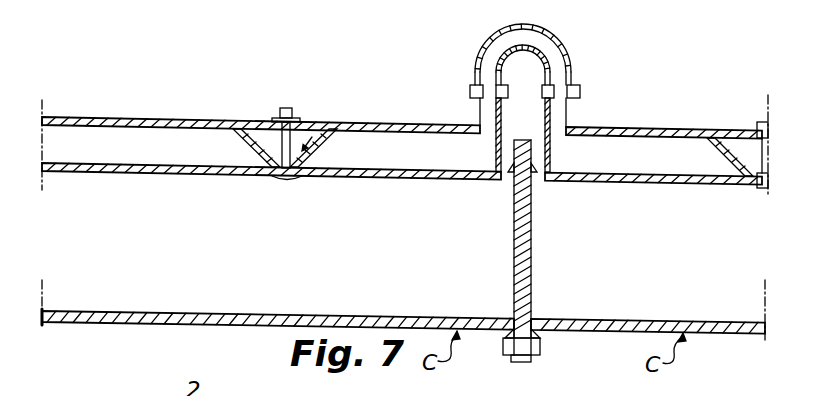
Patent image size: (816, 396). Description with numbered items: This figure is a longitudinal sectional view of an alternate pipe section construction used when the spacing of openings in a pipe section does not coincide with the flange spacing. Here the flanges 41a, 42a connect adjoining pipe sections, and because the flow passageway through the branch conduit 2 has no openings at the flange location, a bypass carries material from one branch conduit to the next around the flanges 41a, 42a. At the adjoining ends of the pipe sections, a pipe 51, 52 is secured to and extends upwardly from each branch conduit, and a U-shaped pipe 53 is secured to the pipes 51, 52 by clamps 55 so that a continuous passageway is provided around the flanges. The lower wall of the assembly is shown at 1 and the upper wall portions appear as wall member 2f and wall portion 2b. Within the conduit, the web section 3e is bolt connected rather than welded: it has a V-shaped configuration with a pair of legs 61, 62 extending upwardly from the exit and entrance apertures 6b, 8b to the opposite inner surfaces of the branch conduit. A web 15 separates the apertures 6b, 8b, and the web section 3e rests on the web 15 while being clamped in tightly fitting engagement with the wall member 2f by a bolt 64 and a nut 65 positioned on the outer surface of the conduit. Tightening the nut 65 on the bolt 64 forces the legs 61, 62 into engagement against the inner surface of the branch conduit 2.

The bottom wall of vessel 1 is at (273, 320).
The branch conduit 2 is at (418, 126).
The wall member of the branch conduit 2f is at (124, 117).
The upper wall portion 2b is at (700, 130).
The exit aperture 6b is at (241, 174).
The entrance aperture 8b is at (321, 174).
The leg of the web section 61 is at (246, 146).
The leg of the web section 62 is at (321, 145).
The bolt 64 is at (280, 128).
The nut 65 is at (289, 107).
The web 15 is at (277, 174).
The web section 3e is at (326, 121).
The U-shaped pipe 53 is at (570, 44).
The clamps 55 is at (475, 85).
The pipe 51 is at (480, 113).
The pipe 52 is at (568, 117).
The flange 41a is at (514, 358).
The flange 42a is at (526, 358).